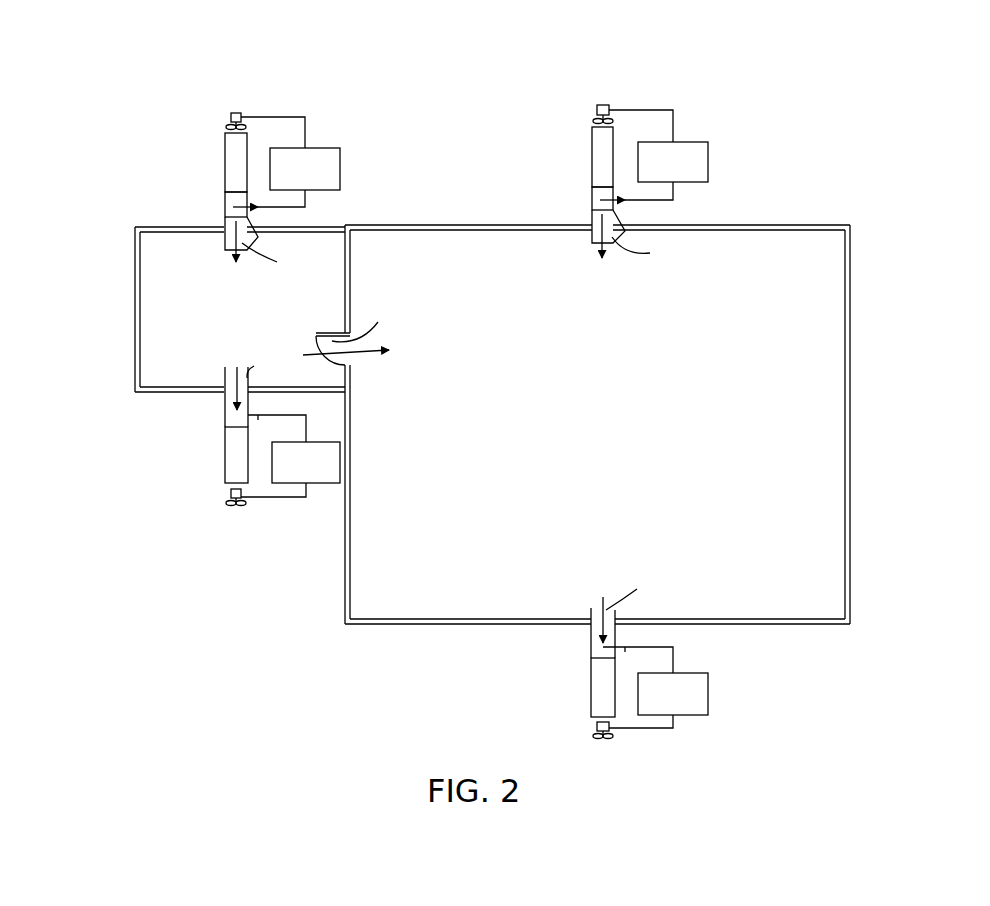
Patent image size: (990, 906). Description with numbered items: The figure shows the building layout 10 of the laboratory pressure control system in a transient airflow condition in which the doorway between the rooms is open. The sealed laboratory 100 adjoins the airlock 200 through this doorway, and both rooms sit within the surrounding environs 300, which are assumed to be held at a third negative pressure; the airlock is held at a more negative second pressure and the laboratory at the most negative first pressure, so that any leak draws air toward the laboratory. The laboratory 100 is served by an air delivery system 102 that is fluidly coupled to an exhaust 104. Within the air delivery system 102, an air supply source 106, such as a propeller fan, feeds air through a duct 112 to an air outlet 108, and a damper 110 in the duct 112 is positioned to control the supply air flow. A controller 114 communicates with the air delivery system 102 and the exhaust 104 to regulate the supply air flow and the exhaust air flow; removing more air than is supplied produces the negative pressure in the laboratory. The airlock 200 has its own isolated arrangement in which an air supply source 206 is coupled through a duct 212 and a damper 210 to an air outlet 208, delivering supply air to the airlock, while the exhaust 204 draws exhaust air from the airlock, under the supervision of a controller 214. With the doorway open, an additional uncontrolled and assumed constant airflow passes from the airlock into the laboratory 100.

The building layout 10 is at (934, 80).
The laboratory 100 is at (851, 395).
The air delivery system 102 is at (717, 114).
The exhaust 104 is at (560, 698).
The air supply source 106 is at (596, 110).
The air outlet 108 is at (591, 243).
The damper 110 is at (592, 198).
The duct 112 is at (592, 167).
The controller 114 is at (710, 158).
The airlock 200 is at (136, 322).
The exhaust 204 is at (205, 477).
The air supply source 206 is at (228, 120).
The air outlet 208 is at (223, 247).
The damper 210 is at (224, 207).
The duct 212 is at (224, 172).
The controller 214 is at (342, 162).
The environs 300 is at (500, 47).